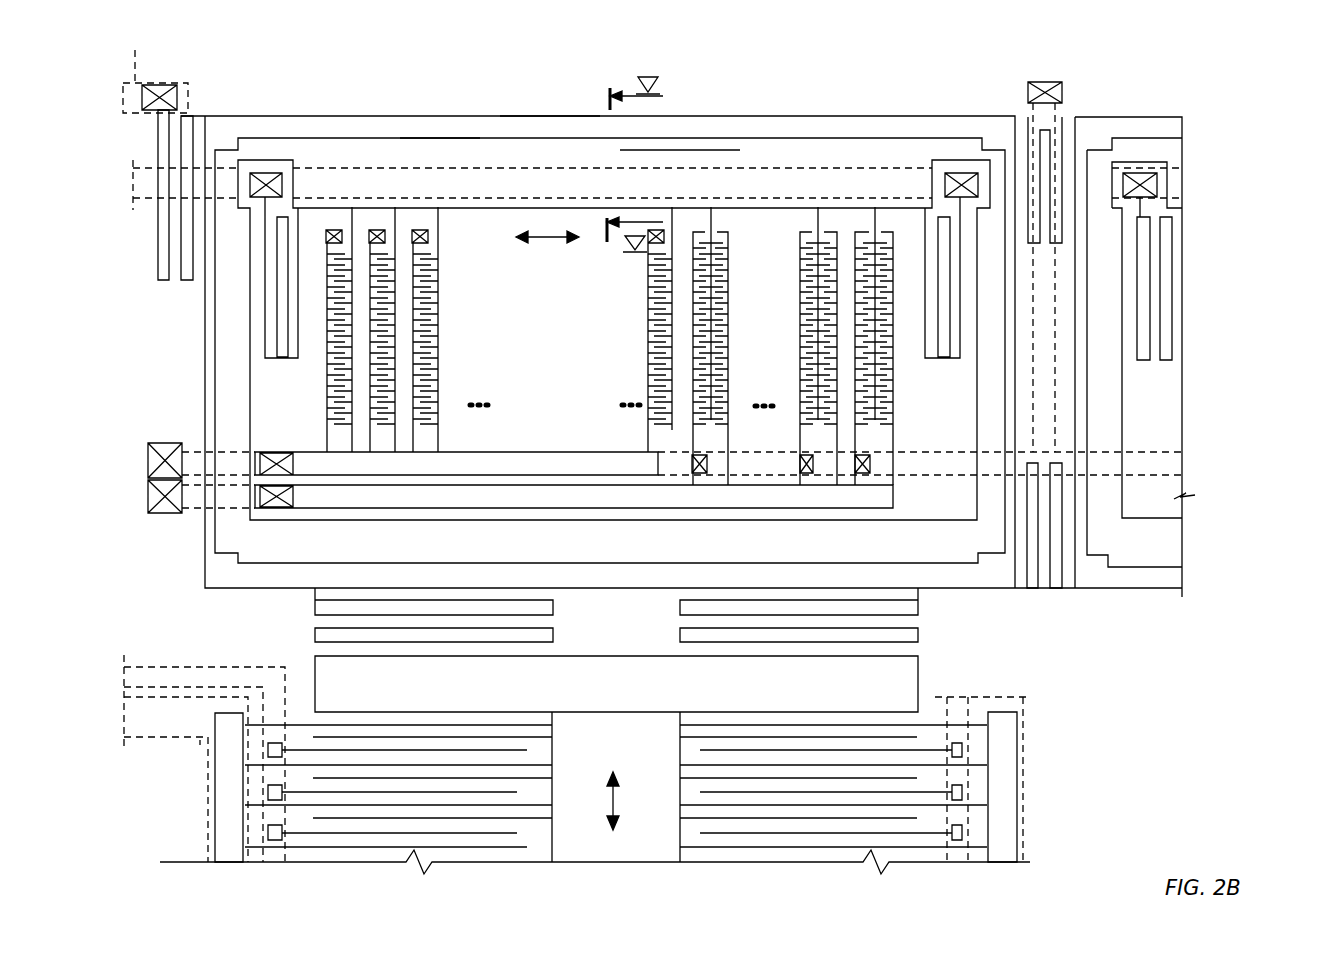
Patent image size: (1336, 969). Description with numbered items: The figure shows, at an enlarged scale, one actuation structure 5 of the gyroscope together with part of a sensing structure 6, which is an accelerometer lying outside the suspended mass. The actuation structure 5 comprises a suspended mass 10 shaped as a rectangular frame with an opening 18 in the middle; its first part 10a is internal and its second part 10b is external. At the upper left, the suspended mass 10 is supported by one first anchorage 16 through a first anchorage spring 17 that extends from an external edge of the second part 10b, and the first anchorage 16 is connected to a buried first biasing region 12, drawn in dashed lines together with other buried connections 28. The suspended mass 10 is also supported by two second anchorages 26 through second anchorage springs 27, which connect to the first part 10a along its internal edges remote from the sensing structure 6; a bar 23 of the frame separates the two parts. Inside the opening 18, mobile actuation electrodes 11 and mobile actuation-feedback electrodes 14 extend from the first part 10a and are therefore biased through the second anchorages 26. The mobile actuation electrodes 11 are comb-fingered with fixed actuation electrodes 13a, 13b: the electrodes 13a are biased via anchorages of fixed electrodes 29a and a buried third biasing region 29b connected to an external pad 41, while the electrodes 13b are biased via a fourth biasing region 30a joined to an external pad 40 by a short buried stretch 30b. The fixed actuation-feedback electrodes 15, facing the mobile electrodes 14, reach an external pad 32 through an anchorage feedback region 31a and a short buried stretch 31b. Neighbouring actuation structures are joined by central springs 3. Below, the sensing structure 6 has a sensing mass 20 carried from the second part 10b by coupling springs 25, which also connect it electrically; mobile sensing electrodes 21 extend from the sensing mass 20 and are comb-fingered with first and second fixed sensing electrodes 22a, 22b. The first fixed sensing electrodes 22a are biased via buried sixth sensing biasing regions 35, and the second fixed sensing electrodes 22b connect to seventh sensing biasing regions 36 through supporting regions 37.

The central springs 3 is at (1063, 138).
The actuation structure 5 is at (356, 96).
The sensing structure 6 is at (590, 870).
The suspended mass 10 is at (815, 108).
The first part 10a is at (673, 157).
The second part 10b is at (541, 127).
The mobile actuation electrodes 11 is at (808, 290).
The first biasing region 12 is at (155, 72).
The fixed actuation electrodes 13a is at (795, 340).
The fixed actuation electrodes 13b is at (830, 388).
The mobile actuation-feedback electrodes 14 is at (408, 291).
The fixed actuation-feedback electrodes 15 is at (384, 347).
The first anchorage 16 is at (152, 84).
The first anchorage spring 17 is at (168, 233).
The opening 18 is at (565, 350).
The sensing mass 20 is at (618, 734).
The mobile sensing electrodes 21 is at (478, 818).
The first fixed sensing electrodes 22a is at (362, 792).
The second fixed sensing electrodes 22b is at (413, 805).
The frame bar 23 is at (440, 137).
The coupling springs 25 is at (435, 630).
The second anchorages 26 is at (262, 173).
The second anchorage springs 27 is at (265, 333).
The wiring 28 is at (150, 168).
The anchorages of fixed electrodes 29a is at (860, 475).
The third biasing region 29b is at (1054, 115).
The fourth biasing region 30a is at (558, 495).
The short buried stretch 30b is at (200, 508).
The anchorage feedback region 31a is at (493, 453).
The short buried stretch 31b is at (198, 452).
The external pad 32 is at (148, 460).
The sixth sensing biasing regions 35 is at (148, 672).
The seventh sensing biasing regions 36 is at (170, 727).
The supporting regions 37 is at (228, 830).
The external pad 40 is at (148, 500).
The external pad 41 is at (1030, 94).